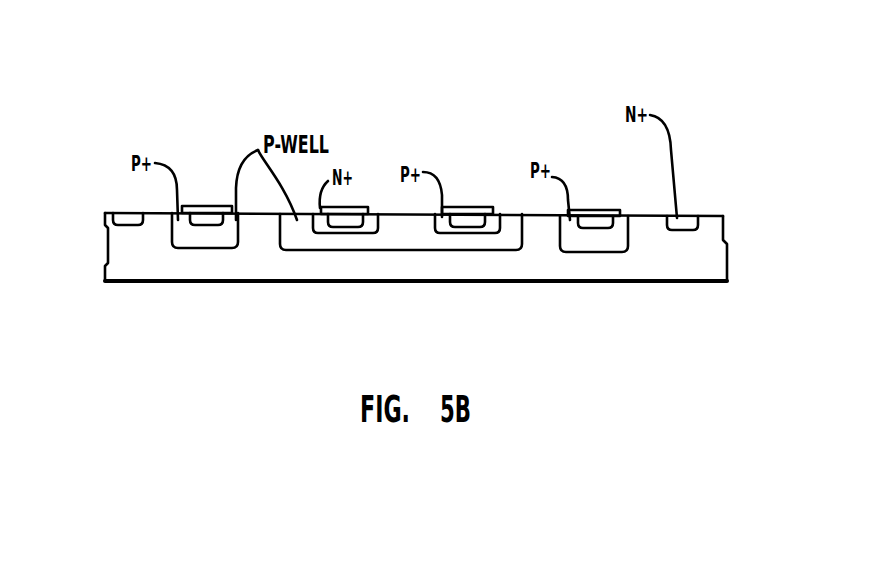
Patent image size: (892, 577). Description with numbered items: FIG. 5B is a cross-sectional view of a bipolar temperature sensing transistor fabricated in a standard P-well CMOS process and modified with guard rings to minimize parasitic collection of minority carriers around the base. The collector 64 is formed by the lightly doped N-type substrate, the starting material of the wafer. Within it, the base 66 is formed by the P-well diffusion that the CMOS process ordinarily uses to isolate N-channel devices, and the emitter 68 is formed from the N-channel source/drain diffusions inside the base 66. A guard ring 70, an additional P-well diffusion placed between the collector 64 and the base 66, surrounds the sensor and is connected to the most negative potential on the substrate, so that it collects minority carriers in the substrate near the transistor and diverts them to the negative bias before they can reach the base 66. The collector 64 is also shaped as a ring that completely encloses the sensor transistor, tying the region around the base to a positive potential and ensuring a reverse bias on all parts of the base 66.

The collector 64 is at (687, 218).
The base 66 is at (468, 210).
The emitter 68 is at (363, 208).
The guard ring 70 is at (597, 208).